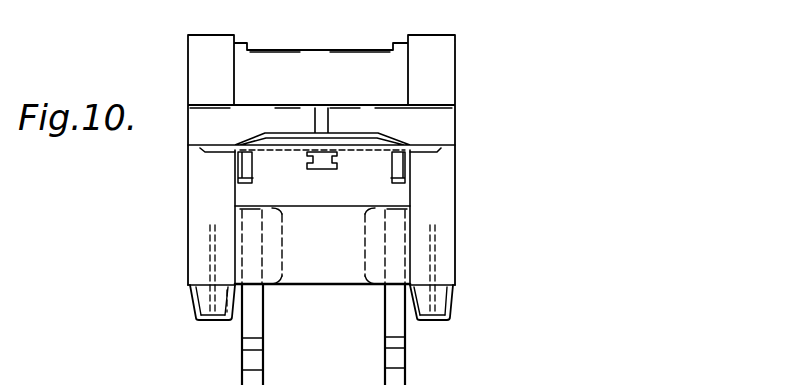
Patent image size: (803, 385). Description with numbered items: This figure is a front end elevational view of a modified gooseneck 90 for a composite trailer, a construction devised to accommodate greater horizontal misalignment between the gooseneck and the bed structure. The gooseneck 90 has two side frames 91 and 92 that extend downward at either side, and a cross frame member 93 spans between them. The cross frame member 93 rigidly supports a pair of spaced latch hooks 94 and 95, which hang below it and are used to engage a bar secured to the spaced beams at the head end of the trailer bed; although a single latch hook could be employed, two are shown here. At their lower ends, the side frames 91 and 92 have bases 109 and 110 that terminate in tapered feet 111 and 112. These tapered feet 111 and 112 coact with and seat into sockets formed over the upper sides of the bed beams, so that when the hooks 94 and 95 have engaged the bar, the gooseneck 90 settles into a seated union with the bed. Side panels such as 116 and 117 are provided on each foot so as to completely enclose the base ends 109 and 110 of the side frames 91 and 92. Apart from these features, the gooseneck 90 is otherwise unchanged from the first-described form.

The gooseneck 90 is at (455, 75).
The side frame 91 is at (445, 183).
The side frame 92 is at (193, 198).
The cross frame member 93 is at (338, 213).
The latch hook 94 is at (390, 328).
The latch hook 95 is at (258, 325).
The base 109 is at (438, 284).
The base 110 is at (207, 297).
The tapered foot 111 is at (453, 310).
The tapered foot 112 is at (198, 313).
The side panel 116 is at (236, 318).
The side panel 117 is at (190, 305).